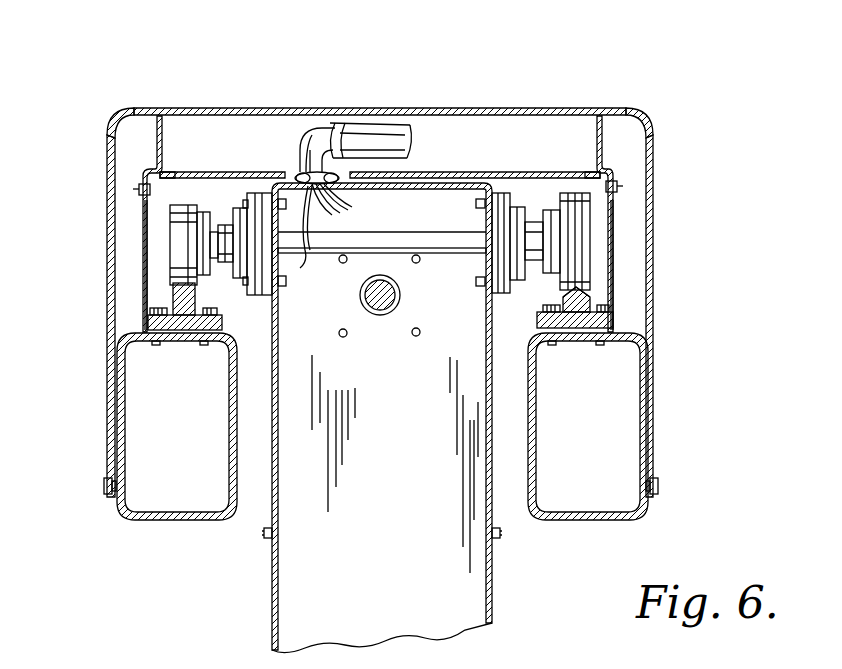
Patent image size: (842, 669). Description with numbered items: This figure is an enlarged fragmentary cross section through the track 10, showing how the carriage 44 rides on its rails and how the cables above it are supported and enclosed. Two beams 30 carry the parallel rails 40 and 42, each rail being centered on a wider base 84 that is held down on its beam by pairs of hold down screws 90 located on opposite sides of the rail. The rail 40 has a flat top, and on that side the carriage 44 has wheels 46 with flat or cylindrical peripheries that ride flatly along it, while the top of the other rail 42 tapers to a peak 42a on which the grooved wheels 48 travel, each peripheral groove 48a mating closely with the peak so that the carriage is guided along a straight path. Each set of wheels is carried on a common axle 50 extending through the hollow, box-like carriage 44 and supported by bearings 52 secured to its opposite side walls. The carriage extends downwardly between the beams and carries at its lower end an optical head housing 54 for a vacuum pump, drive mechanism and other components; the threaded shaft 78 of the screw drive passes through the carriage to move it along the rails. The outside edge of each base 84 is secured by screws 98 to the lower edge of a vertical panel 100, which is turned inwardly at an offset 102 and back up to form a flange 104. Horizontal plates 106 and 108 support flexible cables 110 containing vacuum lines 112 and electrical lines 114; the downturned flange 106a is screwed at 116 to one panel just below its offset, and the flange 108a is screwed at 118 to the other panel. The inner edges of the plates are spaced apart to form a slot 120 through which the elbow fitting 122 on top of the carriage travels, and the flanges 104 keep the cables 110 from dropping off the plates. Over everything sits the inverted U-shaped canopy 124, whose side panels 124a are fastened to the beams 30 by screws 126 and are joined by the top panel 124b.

The track 10 is at (672, 72).
The beams 30 is at (212, 520).
The rail 40 is at (180, 298).
The rail 42 is at (570, 299).
The peak 42a is at (565, 290).
The carriage 44 is at (406, 399).
The wheels 46 is at (178, 248).
The grooved wheels 48 is at (600, 241).
The peripheral groove 48a is at (575, 250).
The axle 50 is at (412, 235).
The bearings 52 is at (276, 283).
The housing 54 is at (500, 582).
The threaded shaft 78 is at (385, 302).
The base 84 is at (185, 322).
The hold down screws 90 is at (160, 312).
The screws 98 is at (145, 330).
The vertical panel 100 is at (145, 243).
The offset 102 is at (145, 172).
The flange 104 is at (158, 117).
The horizontal plate 106 is at (217, 141).
The downturned flange 106a is at (150, 200).
The horizontal plate 108 is at (475, 154).
The flange 108a is at (600, 186).
The flexible cables 110 is at (360, 122).
The vacuum lines 112 is at (343, 207).
The electrical lines 114 is at (300, 255).
The screw 116 is at (139, 189).
The screw 118 is at (617, 186).
The slot 120 is at (300, 172).
The elbow fitting 122 is at (310, 135).
The canopy 124 is at (366, 275).
The side panels 124a is at (112, 178).
The top panel 124b is at (275, 108).
The screws 126 is at (106, 488).